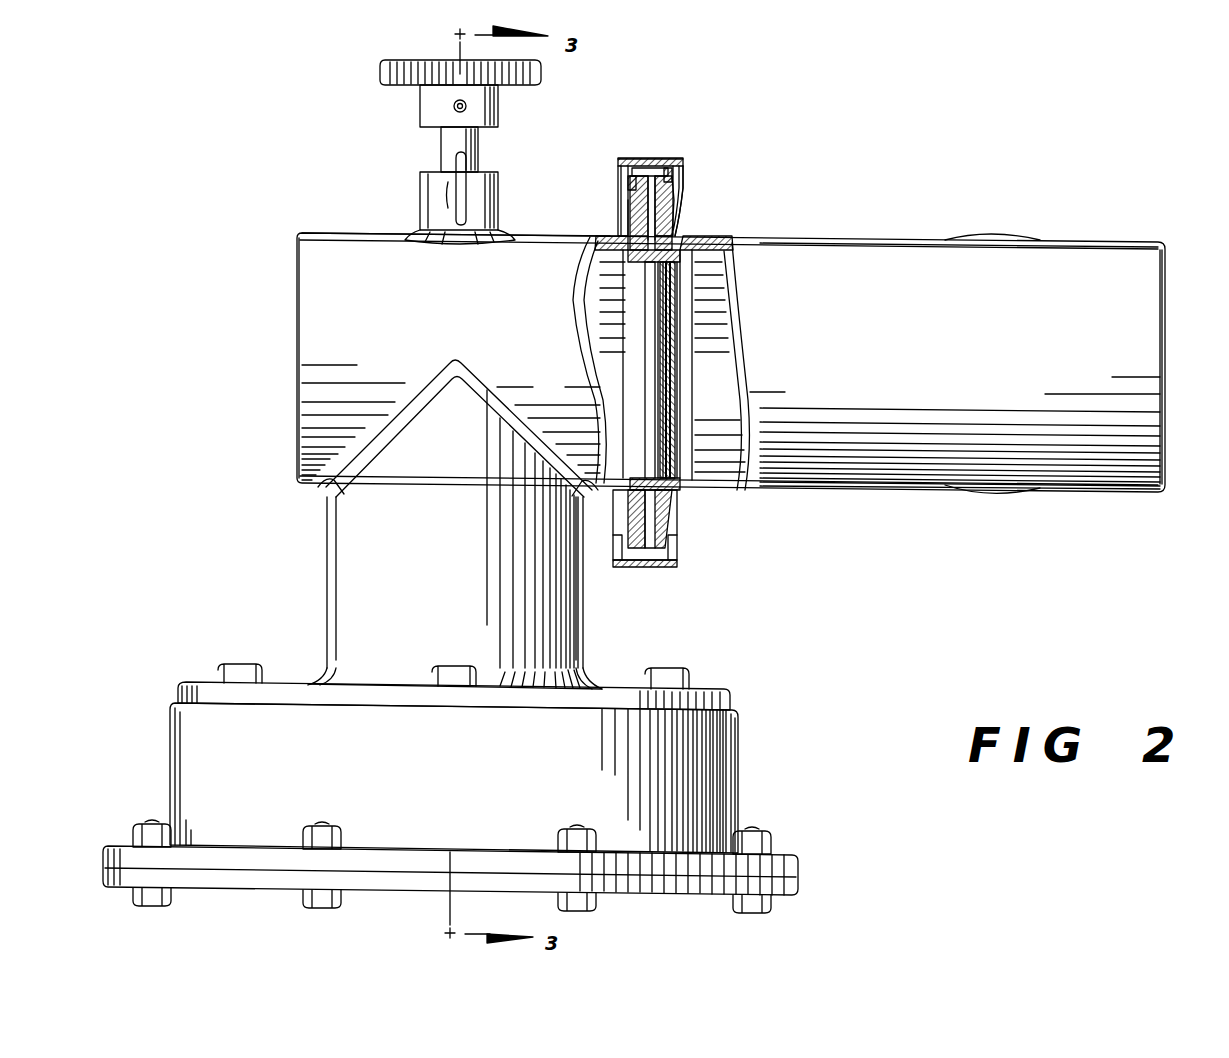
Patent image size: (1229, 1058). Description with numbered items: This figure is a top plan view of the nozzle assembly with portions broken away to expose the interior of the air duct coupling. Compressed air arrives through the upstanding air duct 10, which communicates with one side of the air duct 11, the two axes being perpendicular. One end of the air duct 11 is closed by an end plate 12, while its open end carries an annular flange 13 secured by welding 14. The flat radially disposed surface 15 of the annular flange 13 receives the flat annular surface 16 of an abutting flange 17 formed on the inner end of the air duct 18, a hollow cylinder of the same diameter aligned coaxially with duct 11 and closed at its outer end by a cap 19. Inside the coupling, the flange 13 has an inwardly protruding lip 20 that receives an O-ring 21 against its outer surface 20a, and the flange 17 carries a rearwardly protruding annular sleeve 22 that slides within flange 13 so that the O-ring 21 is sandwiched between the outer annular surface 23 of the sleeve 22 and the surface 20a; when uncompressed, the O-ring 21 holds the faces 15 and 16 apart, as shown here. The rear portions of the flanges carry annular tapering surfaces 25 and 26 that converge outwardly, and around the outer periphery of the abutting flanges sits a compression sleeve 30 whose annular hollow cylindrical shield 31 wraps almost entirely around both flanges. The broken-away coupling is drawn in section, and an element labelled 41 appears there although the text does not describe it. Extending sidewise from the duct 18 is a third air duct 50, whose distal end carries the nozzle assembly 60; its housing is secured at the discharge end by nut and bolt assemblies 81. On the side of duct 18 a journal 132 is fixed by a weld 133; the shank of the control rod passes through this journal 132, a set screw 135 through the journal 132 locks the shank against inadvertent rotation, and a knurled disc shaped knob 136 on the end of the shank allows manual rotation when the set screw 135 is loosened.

The air duct 10 is at (1005, 236).
The air duct 11 is at (828, 244).
The end plate 12 is at (1165, 362).
The annular flange 13 is at (682, 224).
The welding 14 is at (708, 240).
The flat radially disposed surface 15 is at (632, 196).
The flat annular surface 16 is at (668, 208).
The abutting flange 17 is at (620, 217).
The air duct 18 is at (360, 238).
The cap 19 is at (296, 318).
The annular inwardly protruding lip 20 is at (682, 470).
The outer surface 20a is at (685, 460).
The O-ring 21 is at (648, 476).
The rearwardly protruding annular sleeve 22 is at (622, 272).
The outer annular surface 23 is at (658, 290).
The annular tapering surface 25 is at (672, 192).
The annular tapering surface 26 is at (626, 176).
The compression sleeve 30 is at (660, 154).
The annular hollow cylindrical shield 31 is at (643, 158).
The housing wall 41 is at (684, 170).
The third air duct 50 is at (328, 552).
The nozzle assembly 60 is at (722, 686).
The nut and bolt assemblies 81 is at (152, 905).
The journal 132 is at (422, 182).
The weld 133 is at (500, 236).
The set screw 135 is at (466, 162).
The knurled disc shaped knob 136 is at (524, 86).